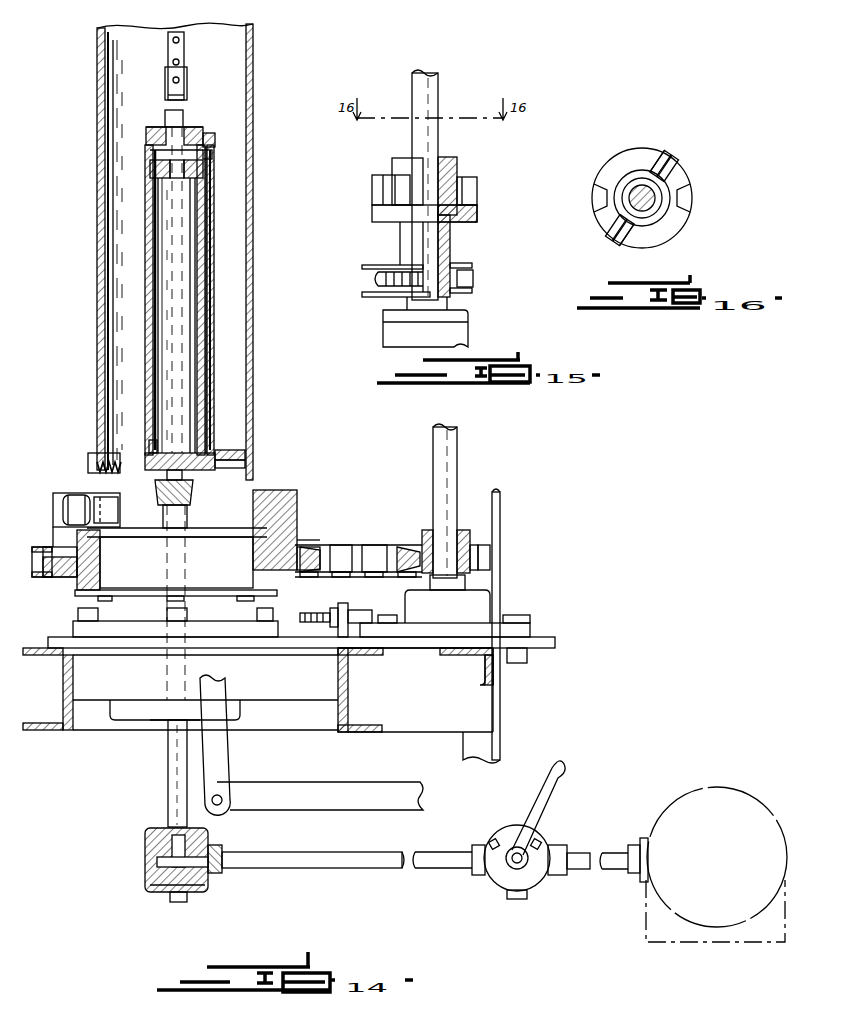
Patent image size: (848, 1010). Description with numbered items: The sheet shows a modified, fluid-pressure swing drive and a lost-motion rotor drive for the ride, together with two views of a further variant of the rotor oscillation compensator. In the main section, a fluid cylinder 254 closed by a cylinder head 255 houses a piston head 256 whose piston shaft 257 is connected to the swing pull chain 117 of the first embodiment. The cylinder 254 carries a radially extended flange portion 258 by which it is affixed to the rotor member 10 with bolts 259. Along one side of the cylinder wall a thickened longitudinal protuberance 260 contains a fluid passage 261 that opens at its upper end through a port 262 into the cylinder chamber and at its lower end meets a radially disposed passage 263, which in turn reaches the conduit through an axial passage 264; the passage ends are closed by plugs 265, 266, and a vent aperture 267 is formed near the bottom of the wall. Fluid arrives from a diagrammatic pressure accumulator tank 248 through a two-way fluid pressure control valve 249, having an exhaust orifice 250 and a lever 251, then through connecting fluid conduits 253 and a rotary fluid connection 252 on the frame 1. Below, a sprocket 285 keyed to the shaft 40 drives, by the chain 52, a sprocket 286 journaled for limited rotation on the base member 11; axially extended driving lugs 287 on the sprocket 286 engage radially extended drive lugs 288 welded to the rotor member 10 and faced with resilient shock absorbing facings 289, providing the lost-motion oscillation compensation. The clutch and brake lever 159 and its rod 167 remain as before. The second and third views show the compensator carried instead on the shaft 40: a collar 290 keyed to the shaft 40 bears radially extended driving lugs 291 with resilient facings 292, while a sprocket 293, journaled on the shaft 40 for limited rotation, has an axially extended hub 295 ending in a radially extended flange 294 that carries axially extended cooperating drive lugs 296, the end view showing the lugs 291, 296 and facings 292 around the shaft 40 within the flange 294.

In FIG. 14, the frame 1 is at (487, 747).
In FIG. 14, the rotor member 10 is at (256, 222).
In FIG. 14, the base member 11 is at (176, 562).
In FIG. 14, the shaft 40 is at (433, 469).
In FIG. 15, the shaft 40 is at (422, 92).
In FIG. 16, the shaft 40 is at (638, 185).
In FIG. 14, the chain 52 is at (340, 549).
In FIG. 15, the chain 52 is at (368, 264).
In FIG. 14, the swing pull chain 117 is at (170, 61).
In FIG. 14, the lever 159 is at (218, 752).
In FIG. 14, the rod 167 is at (300, 790).
In FIG. 14, the pressure accumulator tank 248 is at (730, 808).
In FIG. 14, the two-way fluid pressure control valve 249 is at (500, 834).
In FIG. 14, the exhaust orifice 250 is at (516, 900).
In FIG. 14, the lever 251 is at (542, 793).
In FIG. 14, the rotary fluid connection 252 is at (195, 893).
In FIG. 14, the fluid conduits 253 is at (170, 775).
In FIG. 14, the fluid cylinder 254 is at (148, 233).
In FIG. 14, the cylinder head 255 is at (150, 136).
In FIG. 14, the piston head 256 is at (150, 172).
In FIG. 14, the piston shaft 257 is at (172, 118).
In FIG. 14, the radially extended flange portion 258 is at (240, 468).
In FIG. 14, the bolts 259 is at (100, 455).
In FIG. 14, the thickened longitudinal protuberance 260 is at (215, 273).
In FIG. 14, the fluid passage 261 is at (204, 322).
In FIG. 14, the port 262 is at (208, 156).
In FIG. 14, the radially disposed passage 263 is at (230, 450).
In FIG. 14, the axial passage 264 is at (193, 503).
In FIG. 14, the plug 265 is at (203, 138).
In FIG. 14, the plug 266 is at (240, 456).
In FIG. 14, the vent aperture 267 is at (150, 442).
In FIG. 14, the sprocket 285 is at (422, 528).
In FIG. 14, the sprocket 286 is at (75, 600).
In FIG. 14, the driving lugs 287 is at (298, 505).
In FIG. 14, the drive lugs 288 is at (72, 495).
In FIG. 14, the resilient shock absorbing facings 289 is at (97, 466).
In FIG. 15, the collar 290 is at (457, 160).
In FIG. 15, the driving lugs 291 is at (388, 175).
In FIG. 16, the driving lugs 291 is at (672, 160).
In FIG. 15, the resilient shock absorbing facings 292 is at (375, 192).
In FIG. 16, the resilient shock absorbing facings 292 is at (683, 176).
In FIG. 15, the sprocket 293 is at (473, 279).
In FIG. 15, the radially extended flange 294 is at (473, 221).
In FIG. 16, the radially extended flange 294 is at (607, 166).
In FIG. 15, the axially extended hub 295 is at (450, 248).
In FIG. 15, the drive lugs 296 is at (372, 208).
In FIG. 16, the drive lugs 296 is at (596, 197).